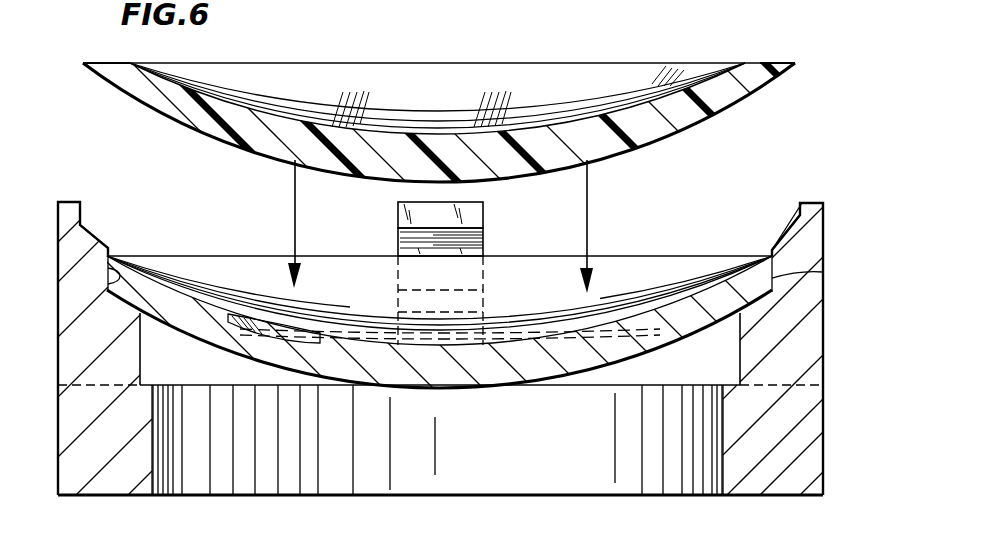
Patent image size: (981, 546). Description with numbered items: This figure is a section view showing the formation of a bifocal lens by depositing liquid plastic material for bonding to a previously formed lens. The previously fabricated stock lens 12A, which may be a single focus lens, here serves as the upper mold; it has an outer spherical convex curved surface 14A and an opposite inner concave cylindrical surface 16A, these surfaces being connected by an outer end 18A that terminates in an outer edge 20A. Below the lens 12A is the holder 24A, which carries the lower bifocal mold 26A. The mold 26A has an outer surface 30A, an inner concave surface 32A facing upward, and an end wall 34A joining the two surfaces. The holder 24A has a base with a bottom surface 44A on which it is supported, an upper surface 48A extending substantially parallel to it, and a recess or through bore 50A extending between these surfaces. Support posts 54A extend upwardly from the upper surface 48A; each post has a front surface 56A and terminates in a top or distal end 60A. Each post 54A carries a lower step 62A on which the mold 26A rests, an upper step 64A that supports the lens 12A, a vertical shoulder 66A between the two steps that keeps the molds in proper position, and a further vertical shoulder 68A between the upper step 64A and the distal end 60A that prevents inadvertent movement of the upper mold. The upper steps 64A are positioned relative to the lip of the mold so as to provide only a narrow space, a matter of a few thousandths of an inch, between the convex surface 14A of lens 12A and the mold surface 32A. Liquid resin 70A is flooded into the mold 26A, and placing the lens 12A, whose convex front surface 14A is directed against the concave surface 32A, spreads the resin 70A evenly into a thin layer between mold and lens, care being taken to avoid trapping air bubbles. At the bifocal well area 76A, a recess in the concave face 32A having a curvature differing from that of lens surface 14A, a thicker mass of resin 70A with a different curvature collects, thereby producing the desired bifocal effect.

The previously fabricated lens 12A is at (757, 77).
The outer spherical convex curved surface 14A is at (647, 150).
The inner concave cylindrical surface 16A is at (322, 77).
The outer end 18A is at (107, 63).
The outer edge 20A is at (795, 65).
The holder 24A is at (830, 425).
The lower mold 26A is at (570, 383).
The outer surface 30A is at (630, 390).
The inner concave surface 32A is at (663, 313).
The end wall 34A is at (813, 277).
The bottom surface 44A is at (103, 497).
The upper surface 48A is at (217, 386).
The through bore 50A is at (182, 497).
The support posts 54A is at (823, 205).
The front surface 56A is at (140, 352).
The distal end 60A is at (613, 0).
The lower step 62A is at (120, 300).
The upper step 64A is at (82, 233).
The vertically extending shoulder 66A is at (110, 270).
The vertically extending shoulder 68A is at (82, 212).
The liquid resin 70A is at (533, 337).
The bifocal well area 76A is at (262, 322).